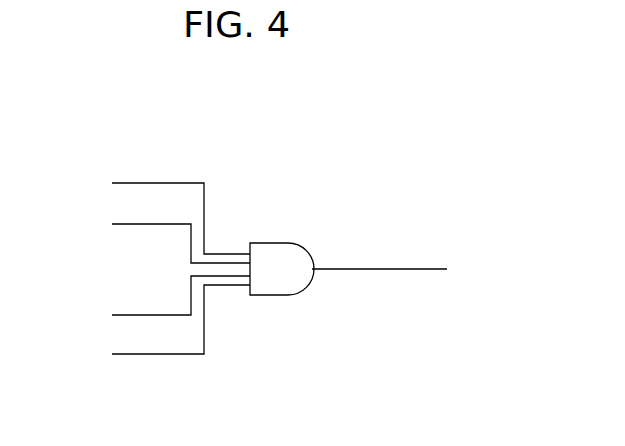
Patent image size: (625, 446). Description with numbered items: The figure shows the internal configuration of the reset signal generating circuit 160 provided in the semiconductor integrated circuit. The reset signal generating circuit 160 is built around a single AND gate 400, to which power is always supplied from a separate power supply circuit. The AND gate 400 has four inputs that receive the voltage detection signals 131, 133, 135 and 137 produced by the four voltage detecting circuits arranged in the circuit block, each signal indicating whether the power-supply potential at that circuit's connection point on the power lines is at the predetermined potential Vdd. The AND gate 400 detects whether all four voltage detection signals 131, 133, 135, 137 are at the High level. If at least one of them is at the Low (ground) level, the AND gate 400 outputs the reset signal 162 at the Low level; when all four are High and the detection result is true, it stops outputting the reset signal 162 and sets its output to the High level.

The reset signal generating circuit 160 is at (398, 155).
The voltage detection signal 131 is at (121, 183).
The voltage detection signal 133 is at (121, 224).
The voltage detection signal 135 is at (121, 315).
The voltage detection signal 137 is at (121, 354).
The AND gate 400 is at (271, 243).
The reset signal 162 is at (397, 270).